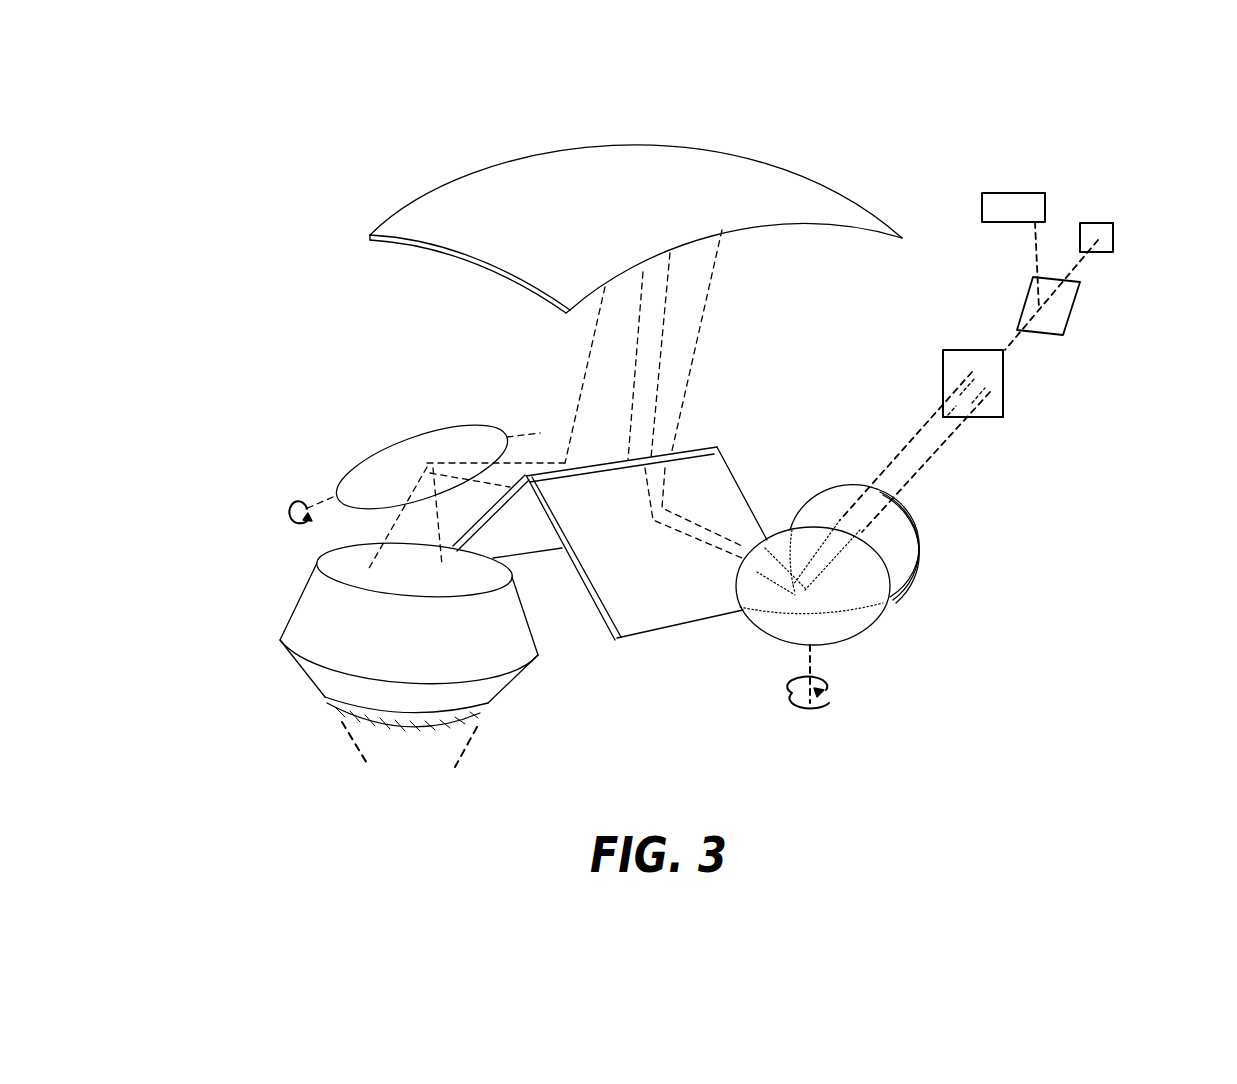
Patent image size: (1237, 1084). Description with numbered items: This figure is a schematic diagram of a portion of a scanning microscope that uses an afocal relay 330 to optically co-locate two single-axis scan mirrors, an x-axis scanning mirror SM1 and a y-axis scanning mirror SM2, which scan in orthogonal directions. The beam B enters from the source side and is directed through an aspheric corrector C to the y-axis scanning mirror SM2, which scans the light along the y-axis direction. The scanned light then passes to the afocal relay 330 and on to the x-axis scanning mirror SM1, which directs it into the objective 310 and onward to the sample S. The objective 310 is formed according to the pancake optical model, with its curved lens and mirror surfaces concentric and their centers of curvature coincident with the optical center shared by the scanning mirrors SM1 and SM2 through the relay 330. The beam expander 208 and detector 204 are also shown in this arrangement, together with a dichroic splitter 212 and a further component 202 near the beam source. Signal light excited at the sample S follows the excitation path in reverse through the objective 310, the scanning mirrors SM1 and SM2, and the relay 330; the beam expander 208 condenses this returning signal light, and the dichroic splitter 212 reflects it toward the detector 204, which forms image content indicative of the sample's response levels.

The afocal relay 330 is at (368, 176).
The objective 310 is at (295, 617).
The detector 204 is at (1025, 195).
The light source module 202 is at (1095, 222).
The dichroic splitter 212 is at (1047, 337).
The beam expander 208 is at (1008, 390).
The x-axis scanning mirror SM1 is at (370, 465).
The y-axis scanning mirror SM2 is at (838, 648).
The aspheric corrector C is at (815, 493).
The beam B is at (953, 425).
The sample S is at (411, 773).